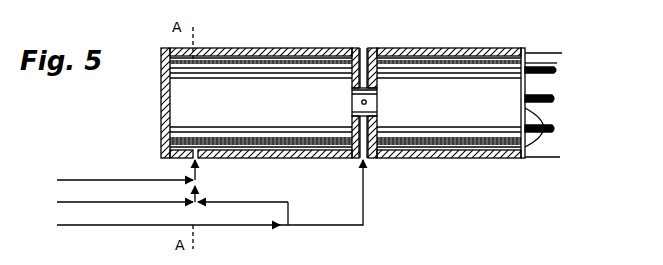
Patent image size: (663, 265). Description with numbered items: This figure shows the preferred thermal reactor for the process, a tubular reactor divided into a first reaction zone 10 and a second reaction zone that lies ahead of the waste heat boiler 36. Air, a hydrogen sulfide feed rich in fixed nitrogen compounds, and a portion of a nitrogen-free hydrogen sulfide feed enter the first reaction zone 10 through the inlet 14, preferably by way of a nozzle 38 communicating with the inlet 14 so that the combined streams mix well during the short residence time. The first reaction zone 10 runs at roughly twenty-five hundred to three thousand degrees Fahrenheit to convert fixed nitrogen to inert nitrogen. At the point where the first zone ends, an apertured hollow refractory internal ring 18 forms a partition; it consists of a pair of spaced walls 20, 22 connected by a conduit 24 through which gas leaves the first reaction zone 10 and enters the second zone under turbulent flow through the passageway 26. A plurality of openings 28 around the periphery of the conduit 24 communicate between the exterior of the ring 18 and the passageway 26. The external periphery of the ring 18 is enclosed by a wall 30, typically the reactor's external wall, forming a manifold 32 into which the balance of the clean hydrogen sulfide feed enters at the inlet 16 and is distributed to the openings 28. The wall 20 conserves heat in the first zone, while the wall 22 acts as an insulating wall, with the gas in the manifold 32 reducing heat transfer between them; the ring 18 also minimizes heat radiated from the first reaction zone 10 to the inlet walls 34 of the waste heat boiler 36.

The first reaction zone 10 is at (275, 85).
The inlet 14 is at (198, 163).
The inlet 16 is at (368, 160).
The hollow refractory internal ring 18 is at (374, 85).
The wall 20 is at (348, 64).
The wall 22 is at (387, 48).
The conduit 24 is at (367, 103).
The passageway 26 is at (350, 101).
The openings 28 is at (375, 108).
The wall 30 is at (358, 47).
The manifold 32 is at (356, 131).
The inlet walls 34 is at (553, 64).
The waste heat boiler 36 is at (562, 53).
The nozzle 38 is at (206, 149).